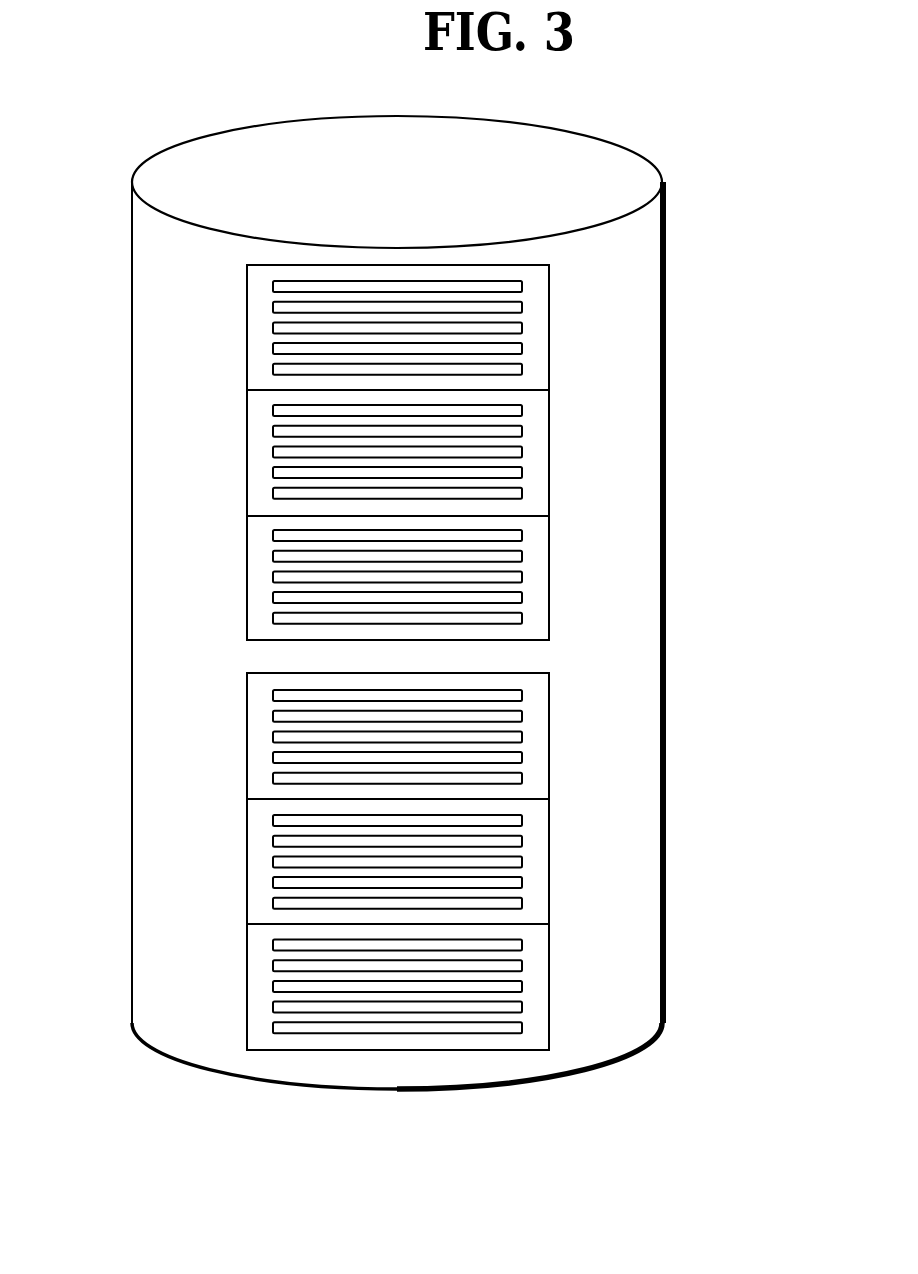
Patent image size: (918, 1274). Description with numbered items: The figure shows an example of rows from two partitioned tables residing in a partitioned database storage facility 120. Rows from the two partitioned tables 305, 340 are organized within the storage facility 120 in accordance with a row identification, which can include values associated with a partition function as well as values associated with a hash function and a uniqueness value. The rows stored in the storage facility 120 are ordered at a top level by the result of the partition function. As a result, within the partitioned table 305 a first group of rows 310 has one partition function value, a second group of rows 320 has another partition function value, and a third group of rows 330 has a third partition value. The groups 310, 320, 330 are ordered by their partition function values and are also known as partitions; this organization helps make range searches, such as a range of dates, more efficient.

The partitioned database storage facility 120 is at (217, 132).
The partitioned table 305 is at (397, 452).
The first group of rows 310 is at (537, 331).
The second group of rows 320 is at (537, 449).
The third group of rows 330 is at (542, 573).
The partitioned table 340 is at (245, 862).